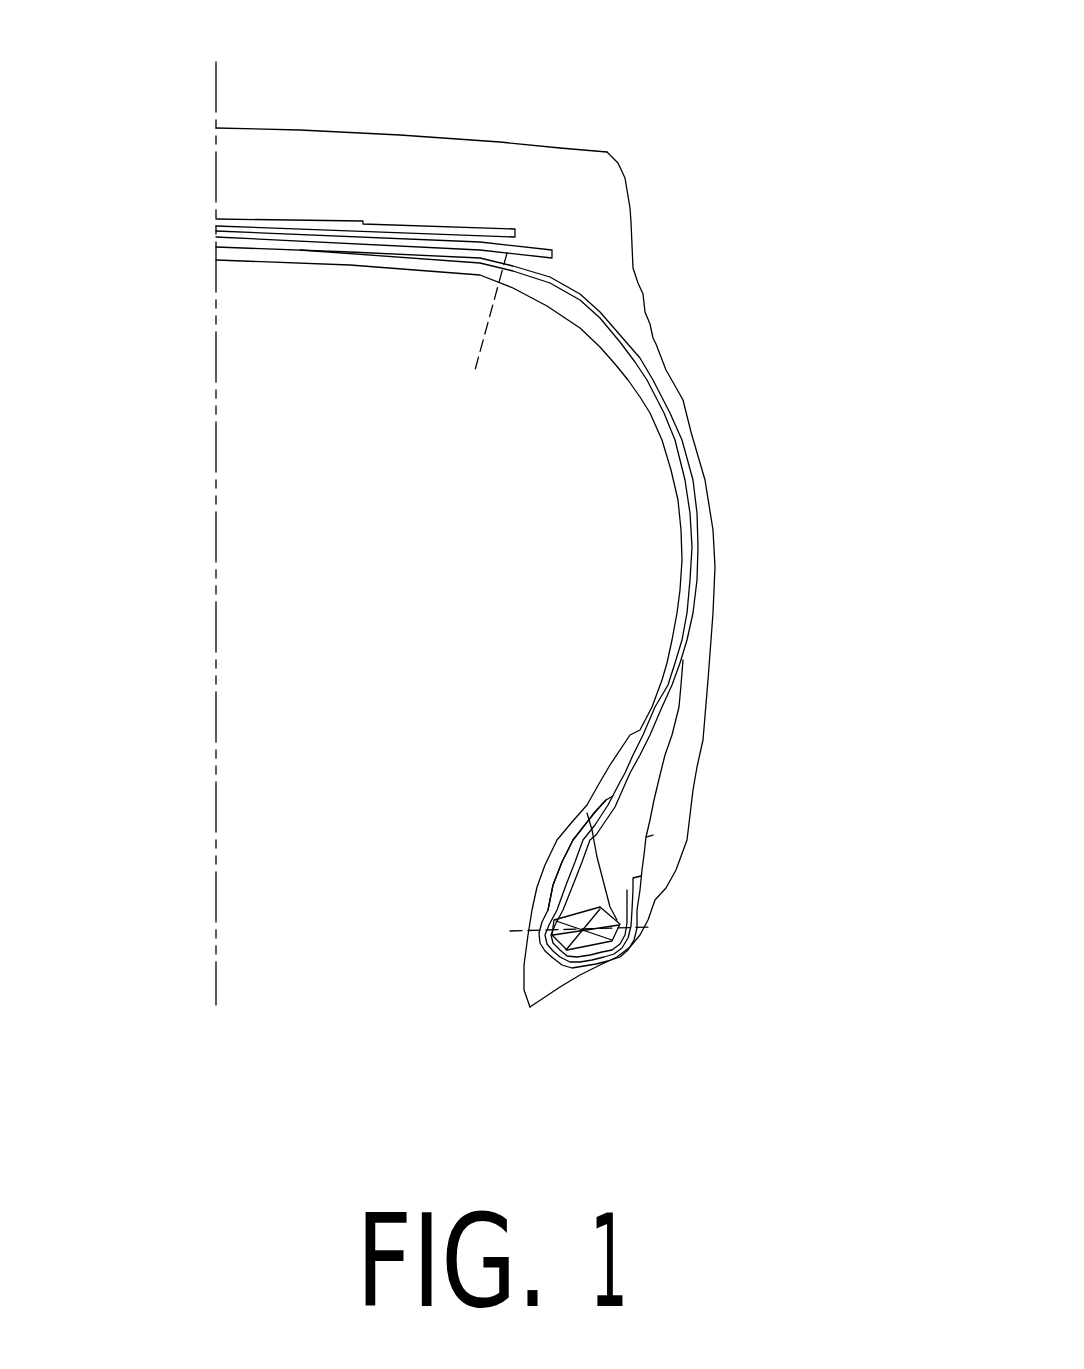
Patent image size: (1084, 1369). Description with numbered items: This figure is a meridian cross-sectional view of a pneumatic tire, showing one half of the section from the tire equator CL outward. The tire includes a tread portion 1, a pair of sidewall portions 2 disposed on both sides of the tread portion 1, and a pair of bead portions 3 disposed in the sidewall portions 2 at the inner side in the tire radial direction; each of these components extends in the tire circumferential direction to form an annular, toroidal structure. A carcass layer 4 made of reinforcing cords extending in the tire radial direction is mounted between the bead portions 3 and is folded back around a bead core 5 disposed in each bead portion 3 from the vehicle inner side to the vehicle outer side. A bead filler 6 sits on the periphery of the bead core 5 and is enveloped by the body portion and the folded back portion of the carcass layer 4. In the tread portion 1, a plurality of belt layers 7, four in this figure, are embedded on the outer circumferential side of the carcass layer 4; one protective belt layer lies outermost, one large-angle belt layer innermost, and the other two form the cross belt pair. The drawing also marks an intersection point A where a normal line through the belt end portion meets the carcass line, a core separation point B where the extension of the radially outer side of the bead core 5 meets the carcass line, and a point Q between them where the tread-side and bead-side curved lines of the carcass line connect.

The tread portion 1 is at (278, 117).
The sidewall portions 2 is at (745, 581).
The bead portions 3 is at (633, 997).
The carcass layer 4 is at (292, 246).
The bead core 5 is at (605, 928).
The bead filler 6 is at (615, 857).
The belt layers 7 is at (216, 219).
The intersection point A is at (505, 260).
The core separation point B is at (553, 918).
The point Q is at (587, 813).
The tire equator CL is at (216, 513).